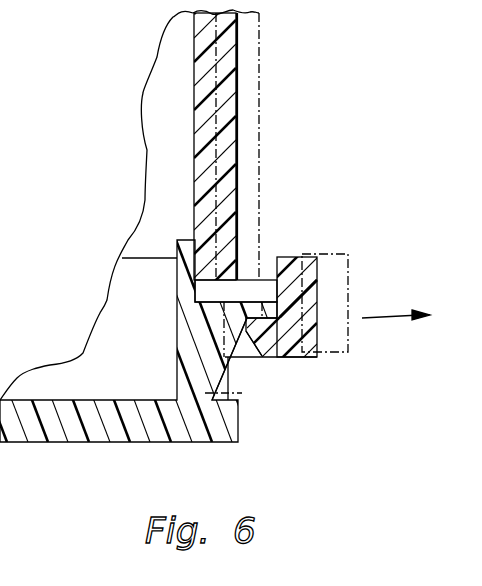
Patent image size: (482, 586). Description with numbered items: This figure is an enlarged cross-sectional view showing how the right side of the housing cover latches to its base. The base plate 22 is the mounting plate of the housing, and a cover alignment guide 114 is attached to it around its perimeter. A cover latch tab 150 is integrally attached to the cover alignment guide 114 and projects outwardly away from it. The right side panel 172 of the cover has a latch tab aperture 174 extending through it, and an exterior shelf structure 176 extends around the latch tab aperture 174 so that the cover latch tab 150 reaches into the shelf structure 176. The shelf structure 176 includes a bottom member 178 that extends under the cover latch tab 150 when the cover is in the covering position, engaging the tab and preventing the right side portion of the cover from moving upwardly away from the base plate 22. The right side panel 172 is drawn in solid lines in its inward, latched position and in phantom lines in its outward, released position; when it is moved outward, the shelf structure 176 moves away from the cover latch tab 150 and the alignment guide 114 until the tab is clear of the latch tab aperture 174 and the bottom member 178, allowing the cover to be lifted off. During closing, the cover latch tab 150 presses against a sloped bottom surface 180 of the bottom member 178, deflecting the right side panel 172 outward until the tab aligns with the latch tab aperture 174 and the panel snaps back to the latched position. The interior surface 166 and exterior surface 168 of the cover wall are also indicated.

The base plate 22 is at (102, 430).
The cover alignment guide 114 is at (222, 352).
The cover latch tab 150 is at (257, 317).
The interior surface 166 is at (193, 173).
The exterior surface 168 is at (240, 117).
The right side panel 172 is at (250, 50).
The latch tab aperture 174 is at (168, 63).
The shelf structure 176 is at (293, 295).
The bottom member 178 is at (295, 357).
The sloped bottom surface 180 is at (260, 355).